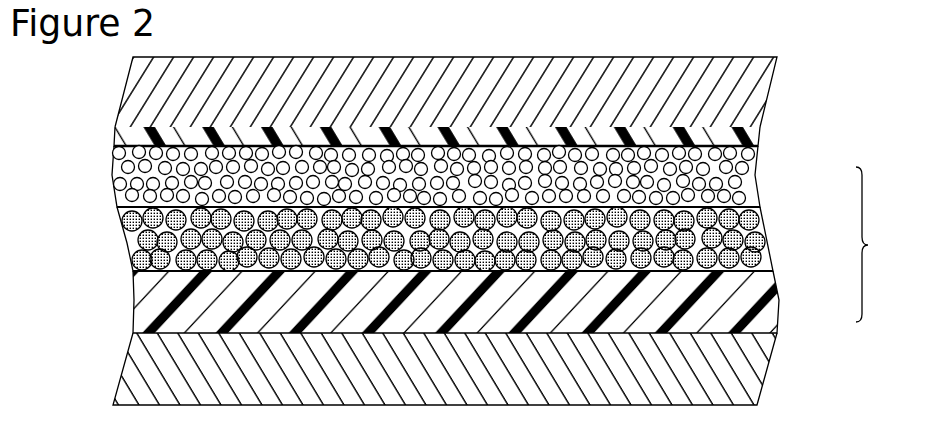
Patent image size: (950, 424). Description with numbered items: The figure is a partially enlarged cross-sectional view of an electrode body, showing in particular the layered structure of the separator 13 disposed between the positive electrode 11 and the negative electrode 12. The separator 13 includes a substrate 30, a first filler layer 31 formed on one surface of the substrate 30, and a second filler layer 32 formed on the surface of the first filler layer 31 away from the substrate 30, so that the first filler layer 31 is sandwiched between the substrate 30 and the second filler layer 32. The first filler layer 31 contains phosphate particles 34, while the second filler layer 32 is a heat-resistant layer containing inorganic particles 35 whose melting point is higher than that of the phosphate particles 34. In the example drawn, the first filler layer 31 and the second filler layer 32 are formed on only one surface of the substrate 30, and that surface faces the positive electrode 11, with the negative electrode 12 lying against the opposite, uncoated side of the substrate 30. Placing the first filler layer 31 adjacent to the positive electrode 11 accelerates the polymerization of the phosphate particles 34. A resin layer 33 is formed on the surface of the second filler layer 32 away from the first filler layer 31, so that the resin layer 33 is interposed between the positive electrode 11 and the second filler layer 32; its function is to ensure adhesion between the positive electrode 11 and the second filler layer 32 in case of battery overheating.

The positive electrode 11 is at (755, 90).
The negative electrode 12 is at (745, 381).
The separator 13 is at (875, 244).
The substrate 30 is at (766, 315).
The first filler layer 31 is at (762, 229).
The second filler layer 32 is at (757, 178).
The resin layer 33 is at (750, 138).
The phosphate particles 34 is at (128, 240).
The inorganic particles 35 is at (117, 163).